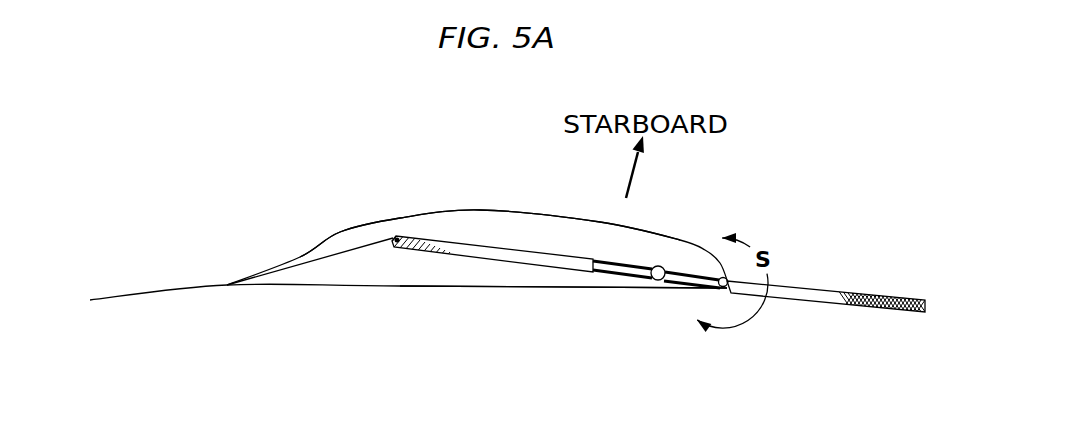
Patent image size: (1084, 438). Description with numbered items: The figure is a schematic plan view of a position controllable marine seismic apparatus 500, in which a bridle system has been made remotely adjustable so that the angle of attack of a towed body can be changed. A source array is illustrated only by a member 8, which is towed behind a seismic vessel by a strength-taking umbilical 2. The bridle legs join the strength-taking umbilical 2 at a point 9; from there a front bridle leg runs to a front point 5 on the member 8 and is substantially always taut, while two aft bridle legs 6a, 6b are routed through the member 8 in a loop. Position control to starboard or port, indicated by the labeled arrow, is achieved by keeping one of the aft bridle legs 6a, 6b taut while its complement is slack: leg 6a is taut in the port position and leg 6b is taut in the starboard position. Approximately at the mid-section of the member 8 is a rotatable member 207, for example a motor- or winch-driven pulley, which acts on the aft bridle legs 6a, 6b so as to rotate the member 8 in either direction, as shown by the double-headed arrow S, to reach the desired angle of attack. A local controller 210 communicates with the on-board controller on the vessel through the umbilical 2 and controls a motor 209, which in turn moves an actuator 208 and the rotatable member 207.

The position controllable marine seismic apparatus 500 is at (462, 160).
The strength-taking umbilical 2 is at (126, 296).
The point 9 is at (225, 283).
The front point 5 is at (396, 236).
The aft bridle leg 6a is at (517, 214).
The aft bridle leg 6b is at (510, 288).
The local controller 210 is at (610, 278).
The motor 209 is at (653, 280).
The actuator 208 is at (690, 275).
The rotatable member 207 is at (729, 288).
The member 8 is at (870, 293).